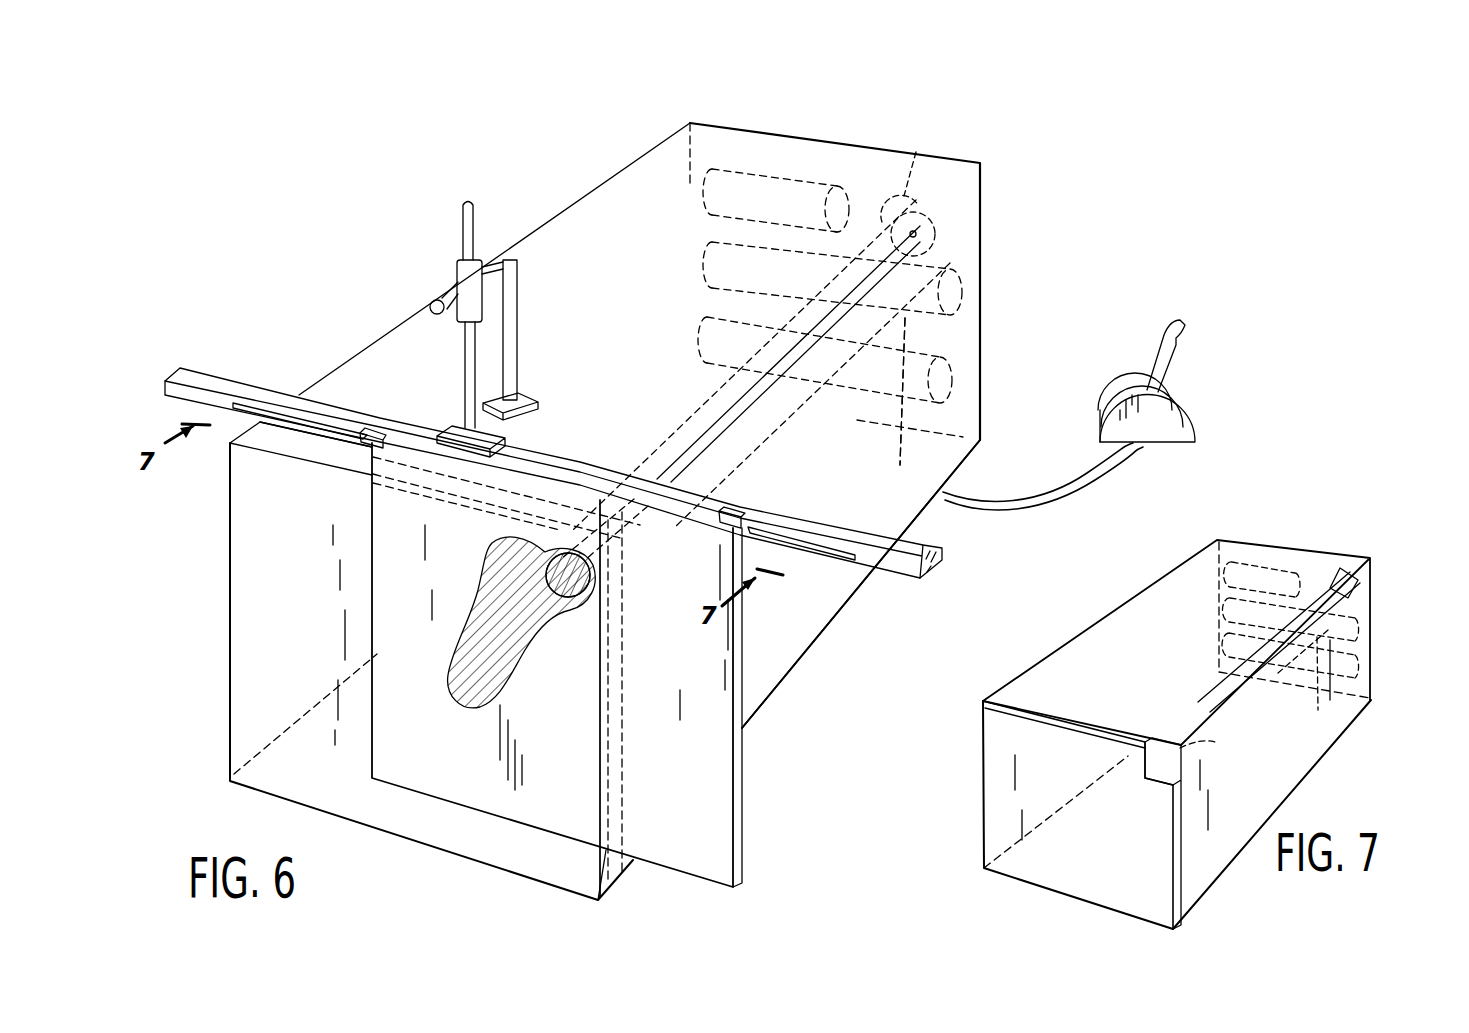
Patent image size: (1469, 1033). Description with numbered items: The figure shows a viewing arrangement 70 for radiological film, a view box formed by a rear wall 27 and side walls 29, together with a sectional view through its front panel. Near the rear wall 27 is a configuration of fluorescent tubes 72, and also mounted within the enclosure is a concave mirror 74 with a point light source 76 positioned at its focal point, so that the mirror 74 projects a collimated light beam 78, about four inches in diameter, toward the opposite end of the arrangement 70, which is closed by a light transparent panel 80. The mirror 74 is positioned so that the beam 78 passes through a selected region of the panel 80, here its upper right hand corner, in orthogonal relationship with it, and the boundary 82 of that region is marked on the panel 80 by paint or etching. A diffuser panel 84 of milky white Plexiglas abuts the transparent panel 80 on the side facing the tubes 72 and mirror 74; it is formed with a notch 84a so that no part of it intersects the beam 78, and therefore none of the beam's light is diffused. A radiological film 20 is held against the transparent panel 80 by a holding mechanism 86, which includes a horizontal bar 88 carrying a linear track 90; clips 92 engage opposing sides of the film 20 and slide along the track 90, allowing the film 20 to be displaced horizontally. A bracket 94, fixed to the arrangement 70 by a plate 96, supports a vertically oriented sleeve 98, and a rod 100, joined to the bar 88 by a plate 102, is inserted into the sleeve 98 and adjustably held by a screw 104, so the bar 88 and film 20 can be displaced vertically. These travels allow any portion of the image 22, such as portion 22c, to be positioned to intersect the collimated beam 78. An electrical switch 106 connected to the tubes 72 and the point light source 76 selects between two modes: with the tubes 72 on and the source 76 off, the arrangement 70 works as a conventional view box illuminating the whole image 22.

In FIG. 6, the radiological film 20 is at (718, 746).
In FIG. 6, the image 22 is at (458, 702).
In FIG. 6, the portion of image 22c is at (560, 598).
In FIG. 6, the rear wall 27 is at (968, 243).
In FIG. 6, the side walls 29 is at (912, 497).
In FIG. 6, the viewing arrangement 70 is at (868, 575).
In FIG. 7, the viewing arrangement 70 is at (983, 752).
In FIG. 6, the fluorescent tubes 72 is at (703, 226).
In FIG. 7, the fluorescent tubes 72 is at (1265, 570).
In FIG. 6, the concave mirror 74 is at (948, 214).
In FIG. 7, the concave mirror 74 is at (1362, 590).
In FIG. 6, the point light source 76 is at (904, 162).
In FIG. 6, the collimated light beam 78 is at (736, 430).
In FIG. 7, the collimated light beam 78 is at (1218, 744).
In FIG. 6, the light transparent panel 80 is at (275, 455).
In FIG. 6, the boundary 82 is at (590, 577).
In FIG. 6, the diffuser panel 84 is at (258, 424).
In FIG. 7, the diffuser panel 84 is at (1118, 843).
In FIG. 6, the notch 84a is at (603, 478).
In FIG. 7, the notch 84a is at (1150, 762).
In FIG. 6, the holding mechanism 86 is at (480, 315).
In FIG. 6, the bar 88 is at (205, 382).
In FIG. 6, the linear track 90 is at (820, 536).
In FIG. 6, the clips 92 is at (373, 432).
In FIG. 6, the bracket 94 is at (511, 285).
In FIG. 6, the plate 96 is at (530, 397).
In FIG. 6, the sleeve 98 is at (458, 270).
In FIG. 6, the rod 100 is at (474, 212).
In FIG. 6, the plate 102 is at (500, 436).
In FIG. 6, the screw 104 is at (430, 303).
In FIG. 6, the electrical switch 106 is at (1165, 408).